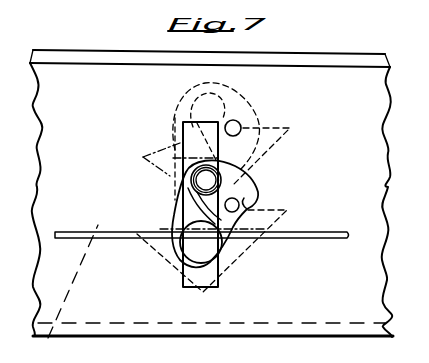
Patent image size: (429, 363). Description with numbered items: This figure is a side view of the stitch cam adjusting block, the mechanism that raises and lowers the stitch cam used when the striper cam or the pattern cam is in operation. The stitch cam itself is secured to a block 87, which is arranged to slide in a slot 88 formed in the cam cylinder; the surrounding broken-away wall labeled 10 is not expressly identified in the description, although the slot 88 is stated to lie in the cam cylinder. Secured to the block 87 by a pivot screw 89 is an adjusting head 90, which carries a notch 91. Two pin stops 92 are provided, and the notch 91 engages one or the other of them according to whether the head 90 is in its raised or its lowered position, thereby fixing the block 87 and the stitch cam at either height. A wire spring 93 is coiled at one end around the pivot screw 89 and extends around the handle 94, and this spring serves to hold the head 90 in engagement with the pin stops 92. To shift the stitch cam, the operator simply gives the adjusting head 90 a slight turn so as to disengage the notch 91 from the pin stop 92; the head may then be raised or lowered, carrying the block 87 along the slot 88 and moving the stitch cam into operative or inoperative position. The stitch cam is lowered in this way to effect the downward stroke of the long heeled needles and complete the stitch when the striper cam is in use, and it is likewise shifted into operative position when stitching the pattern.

The housing 10 is at (47, 107).
The block 87 is at (143, 157).
The slot 88 is at (185, 278).
The pivot screw 89 is at (193, 251).
The adjusting head 90 is at (250, 187).
The notch 91 is at (247, 209).
The pin stops 92 is at (242, 127).
The wire spring 93 is at (197, 202).
The handle 94 is at (200, 181).